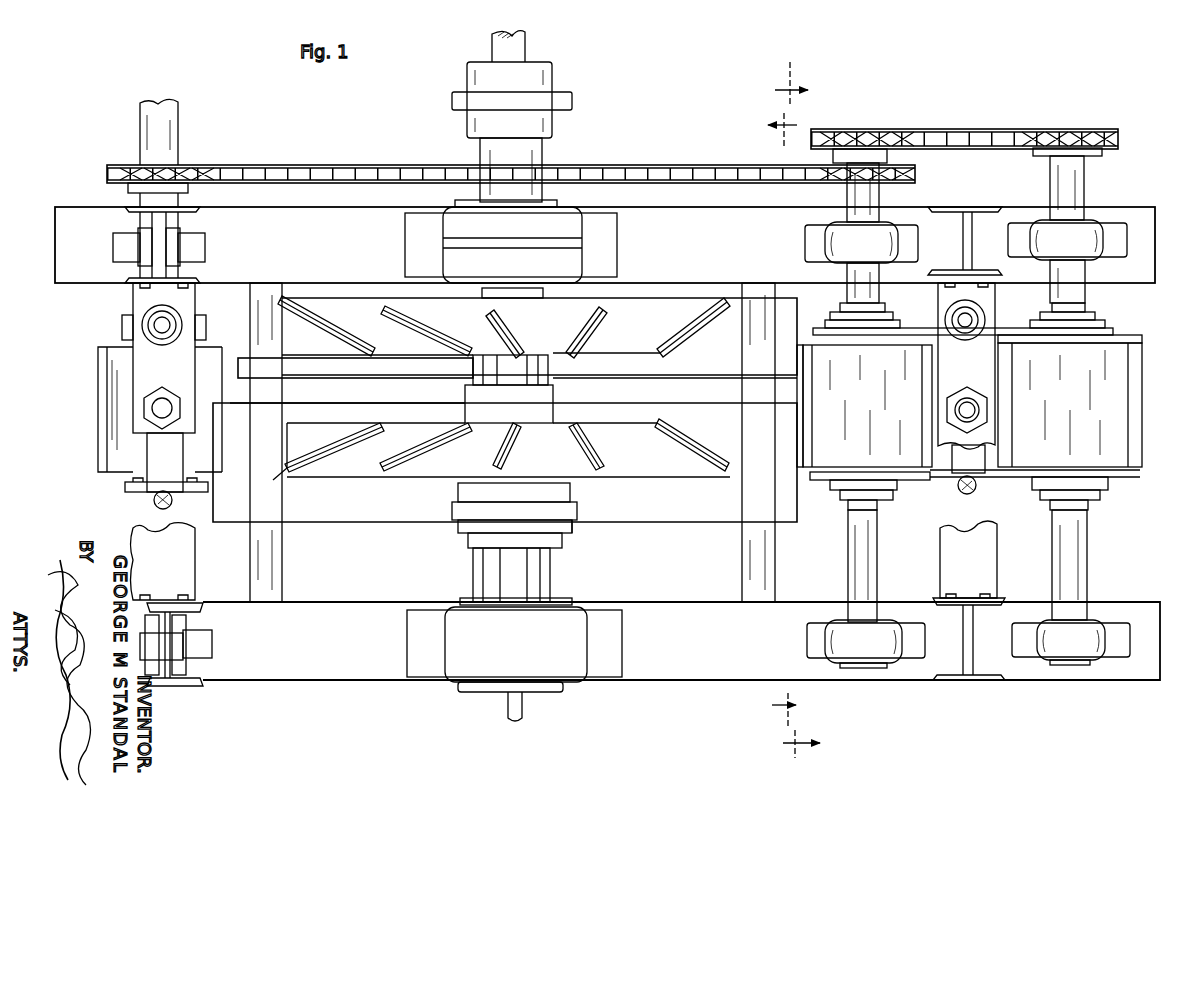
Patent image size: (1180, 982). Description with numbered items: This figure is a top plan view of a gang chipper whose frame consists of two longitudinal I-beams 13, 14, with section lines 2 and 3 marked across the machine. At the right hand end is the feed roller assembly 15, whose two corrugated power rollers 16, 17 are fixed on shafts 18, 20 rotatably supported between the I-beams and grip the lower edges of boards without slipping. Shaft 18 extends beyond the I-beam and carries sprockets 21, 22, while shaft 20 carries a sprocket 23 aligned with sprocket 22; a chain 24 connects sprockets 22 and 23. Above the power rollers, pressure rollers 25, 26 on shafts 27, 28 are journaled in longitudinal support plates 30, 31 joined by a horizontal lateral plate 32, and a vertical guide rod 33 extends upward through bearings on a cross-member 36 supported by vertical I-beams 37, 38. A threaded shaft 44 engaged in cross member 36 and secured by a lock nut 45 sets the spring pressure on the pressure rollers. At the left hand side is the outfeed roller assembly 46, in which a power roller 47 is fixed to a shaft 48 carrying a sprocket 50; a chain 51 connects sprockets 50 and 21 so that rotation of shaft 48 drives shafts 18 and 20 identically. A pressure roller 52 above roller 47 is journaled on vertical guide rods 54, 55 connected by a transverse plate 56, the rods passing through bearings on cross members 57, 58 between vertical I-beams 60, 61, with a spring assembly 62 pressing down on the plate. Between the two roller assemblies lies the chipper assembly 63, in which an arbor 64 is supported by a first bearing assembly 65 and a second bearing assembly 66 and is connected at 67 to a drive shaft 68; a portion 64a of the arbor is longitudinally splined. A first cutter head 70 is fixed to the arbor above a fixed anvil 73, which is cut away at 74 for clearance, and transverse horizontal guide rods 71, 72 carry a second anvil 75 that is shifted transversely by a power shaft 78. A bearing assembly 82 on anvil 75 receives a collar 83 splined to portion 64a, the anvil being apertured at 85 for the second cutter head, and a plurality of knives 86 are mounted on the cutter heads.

The section line 2- 2 is at (806, 410).
The section line 3- 3 is at (776, 417).
The longitudinal I-beam 13 is at (296, 676).
The longitudinal I-beam 14 is at (112, 242).
The feed roller assembly 15 is at (1117, 492).
The power roller 16 is at (926, 462).
The power roller 17 is at (1008, 465).
The shaft 18 is at (855, 558).
The shaft 20 is at (1075, 567).
The sprocket 21 is at (893, 180).
The sprocket 22 is at (875, 136).
The sprocket 23 is at (1073, 136).
The chain 24 is at (998, 133).
The pressure roller 25 is at (830, 485).
The pressure roller 26 is at (1108, 348).
The shaft 27 is at (873, 475).
The shaft 28 is at (1113, 476).
The longitudinal support plate 30 is at (955, 480).
The longitudinal support plate 31 is at (1007, 331).
The horizontal lateral plate 32 is at (980, 478).
The vertical guide rod 33 is at (964, 494).
The horizontal cross-member 36 is at (940, 300).
The vertical I-beam 37 is at (968, 681).
The vertical I-beam 38 is at (980, 206).
The threaded shaft 44 is at (970, 396).
The lock nut 45 is at (963, 402).
The outfeed roller assembly 46 is at (107, 336).
The power roller 47 is at (98, 403).
The shaft 48 is at (180, 200).
The sprocket 50 is at (175, 176).
The chain 51 is at (328, 164).
The pressure roller 52 is at (120, 470).
The vertical guide rod 54 is at (166, 324).
The vertical guide rod 55 is at (154, 501).
The transverse plate 56 is at (172, 466).
The cross member 57 is at (185, 576).
The cross member 58 is at (178, 379).
The vertical I-beam 60 is at (190, 655).
The vertical I-beam 61 is at (180, 256).
The spring assembly 62 is at (150, 425).
The chipper assembly 63 is at (623, 528).
The arbor 64 is at (525, 160).
The splined portion of arbor 64a is at (480, 572).
The first bearing assembly 65 is at (570, 238).
The second bearing assembly 66 is at (560, 654).
The connection 67 is at (563, 95).
The drive shaft 68 is at (528, 50).
The first cutter head 70 is at (361, 330).
The transverse horizontal guide rod 71 is at (270, 565).
The transverse horizontal guide rod 72 is at (752, 572).
The fixed anvil 73 is at (780, 334).
The cut-away 74 is at (700, 330).
The second anvil 75 is at (776, 437).
The power shaft 78 is at (524, 712).
The bearing assembly 82 is at (575, 512).
The collar 83 is at (565, 527).
The aperture 85 is at (688, 442).
The knives 86 is at (420, 330).